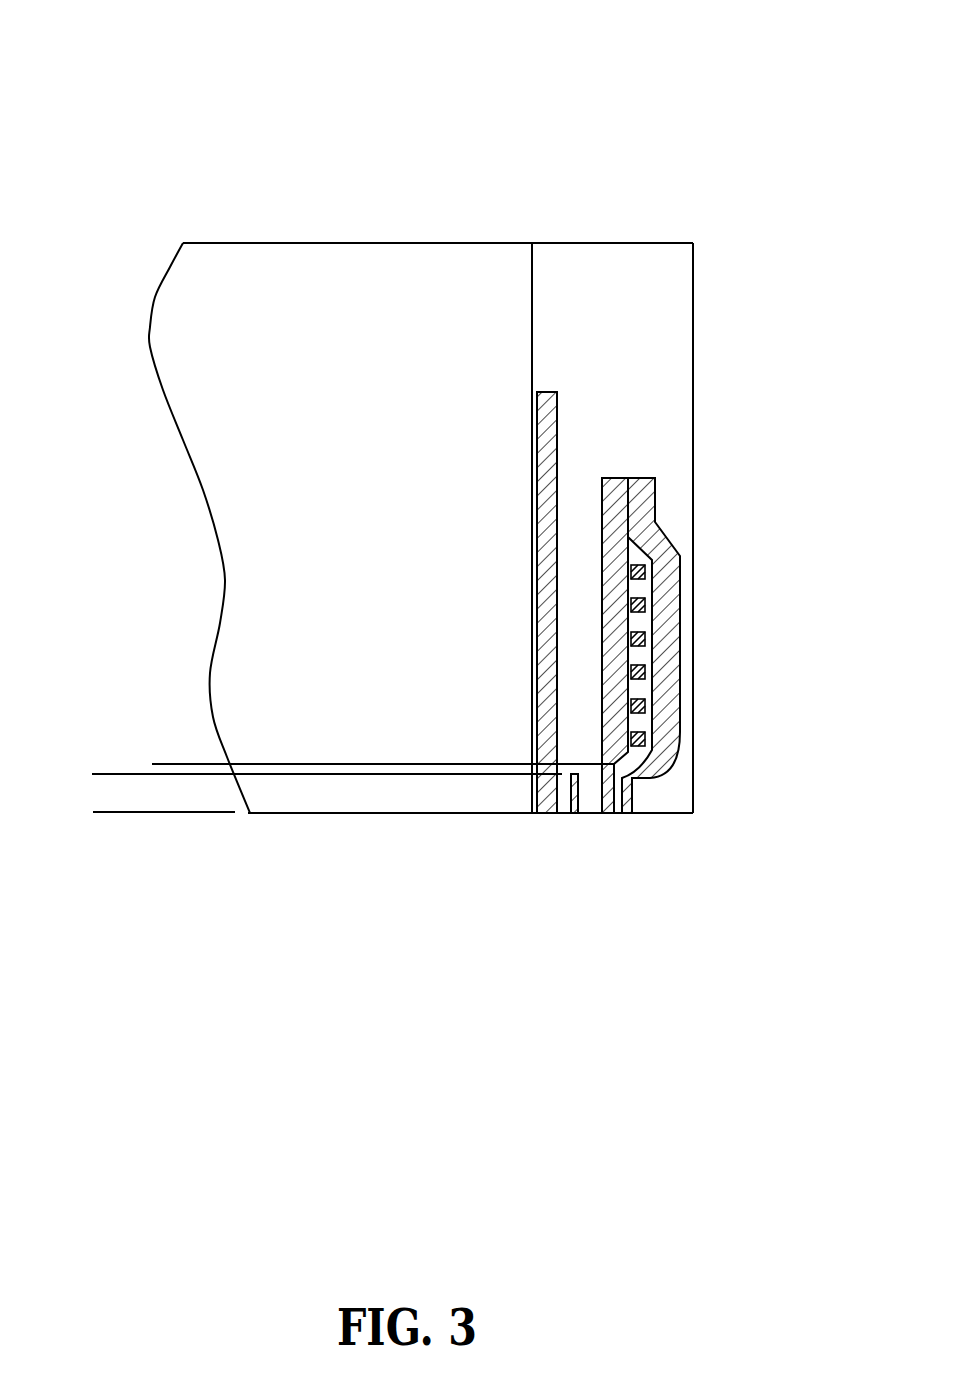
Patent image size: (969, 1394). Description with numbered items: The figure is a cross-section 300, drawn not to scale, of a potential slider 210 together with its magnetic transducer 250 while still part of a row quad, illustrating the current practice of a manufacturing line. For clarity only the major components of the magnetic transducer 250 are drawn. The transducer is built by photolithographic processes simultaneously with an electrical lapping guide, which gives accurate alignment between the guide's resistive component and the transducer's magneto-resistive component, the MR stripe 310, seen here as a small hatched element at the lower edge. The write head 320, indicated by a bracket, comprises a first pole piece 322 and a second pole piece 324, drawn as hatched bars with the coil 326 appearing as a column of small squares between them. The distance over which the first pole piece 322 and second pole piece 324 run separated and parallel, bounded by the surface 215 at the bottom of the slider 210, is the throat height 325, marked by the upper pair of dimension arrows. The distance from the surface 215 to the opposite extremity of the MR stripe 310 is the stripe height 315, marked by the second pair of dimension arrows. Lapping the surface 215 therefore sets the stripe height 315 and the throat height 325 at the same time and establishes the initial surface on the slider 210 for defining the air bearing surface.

The cross-section 300 is at (78, 28).
The slider 210 is at (228, 211).
The surface 215 is at (415, 813).
The magnetic transducer 250 is at (697, 218).
The MR stripe 310 is at (576, 813).
The stripe height 315 is at (117, 885).
The write head 320 is at (718, 591).
The first pole piece 322 is at (608, 643).
The second pole piece 324 is at (668, 710).
The throat height 325 is at (168, 885).
The coil 326 is at (653, 598).